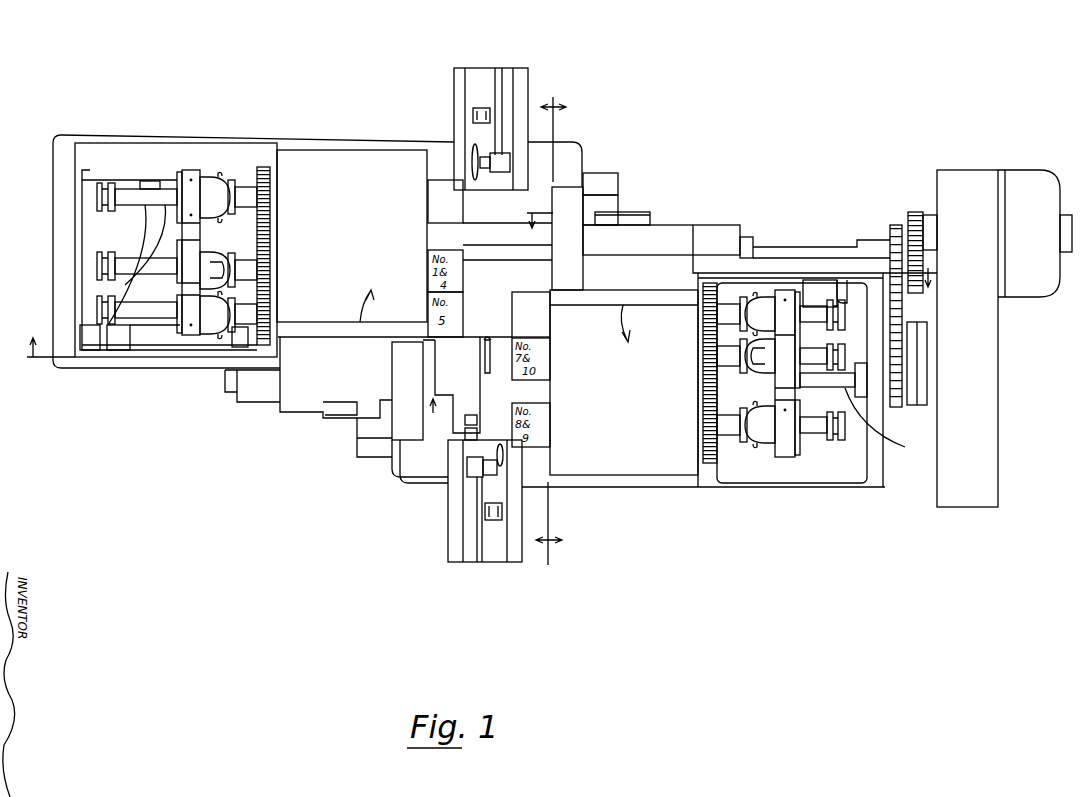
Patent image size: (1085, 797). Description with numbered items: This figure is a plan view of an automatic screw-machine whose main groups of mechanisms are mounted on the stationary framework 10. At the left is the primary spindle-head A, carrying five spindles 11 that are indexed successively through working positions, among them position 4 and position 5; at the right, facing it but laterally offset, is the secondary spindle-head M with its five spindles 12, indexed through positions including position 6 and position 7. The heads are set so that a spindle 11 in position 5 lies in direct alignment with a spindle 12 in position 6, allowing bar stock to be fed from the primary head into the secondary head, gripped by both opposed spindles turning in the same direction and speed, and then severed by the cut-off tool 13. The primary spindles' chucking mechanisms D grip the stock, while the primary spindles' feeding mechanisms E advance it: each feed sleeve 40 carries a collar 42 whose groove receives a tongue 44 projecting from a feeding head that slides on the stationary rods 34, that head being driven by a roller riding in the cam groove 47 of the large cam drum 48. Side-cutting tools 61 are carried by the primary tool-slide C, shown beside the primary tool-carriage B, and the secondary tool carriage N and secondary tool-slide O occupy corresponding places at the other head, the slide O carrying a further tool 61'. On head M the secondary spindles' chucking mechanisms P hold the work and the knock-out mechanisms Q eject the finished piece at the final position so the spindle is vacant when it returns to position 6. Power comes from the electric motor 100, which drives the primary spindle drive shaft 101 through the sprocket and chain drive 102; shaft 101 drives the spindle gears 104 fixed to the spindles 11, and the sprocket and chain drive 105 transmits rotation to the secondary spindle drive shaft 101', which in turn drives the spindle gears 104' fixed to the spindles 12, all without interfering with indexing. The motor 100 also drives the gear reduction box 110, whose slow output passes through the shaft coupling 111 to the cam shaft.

The stationary framework 10 is at (53, 236).
The stationary rods 34 is at (155, 350).
The tongue 44 is at (88, 352).
The primary spindles' feeding mechanisms E is at (116, 352).
The large cam drum 48 is at (88, 180).
The collar 42 is at (105, 183).
The feed sleeve 40 is at (135, 189).
The cam groove 47 is at (130, 234).
The primary spindles' chucking mechanisms D is at (193, 170).
The spindle gears 104 is at (281, 252).
The spindle position No. 6 is at (228, 375).
The primary spindle-head A is at (344, 155).
The secondary tool carriage N is at (410, 440).
The cut-off tool 13 is at (496, 322).
The pin 61' is at (492, 445).
The secondary tool-slide O is at (500, 563).
The primary spindles 11 is at (463, 215).
The secondary spindles 12 is at (517, 292).
The primary tool-slide C is at (478, 78).
The side-cutting tools 61 is at (451, 151).
The spindle position No. 4 is at (538, 332).
The spindle position No. 5 is at (558, 331).
The primary tool-carriage B is at (578, 185).
The primary spindle drive shaft 101 is at (685, 233).
The spindle position No. 7 is at (725, 260).
The secondary spindle-head M is at (658, 475).
The secondary spindles' chucking mechanisms P is at (785, 300).
The secondary spindles' knock-out mechanisms Q is at (842, 285).
The secondary spindle gears 104' is at (685, 373).
The secondary spindle drive shaft 101' is at (886, 422).
The gear reduction box 110 is at (998, 368).
The electric motor 100 is at (1020, 175).
The sprocket and chain drive 102 is at (915, 212).
The sprocket and chain drive 105 is at (903, 306).
The shaft coupling 111 is at (917, 407).